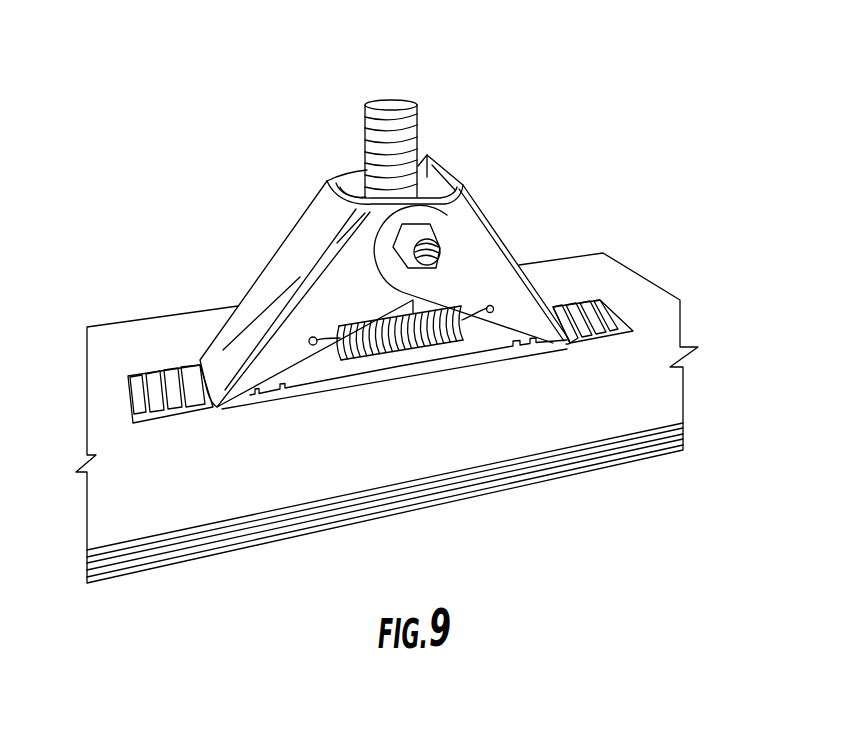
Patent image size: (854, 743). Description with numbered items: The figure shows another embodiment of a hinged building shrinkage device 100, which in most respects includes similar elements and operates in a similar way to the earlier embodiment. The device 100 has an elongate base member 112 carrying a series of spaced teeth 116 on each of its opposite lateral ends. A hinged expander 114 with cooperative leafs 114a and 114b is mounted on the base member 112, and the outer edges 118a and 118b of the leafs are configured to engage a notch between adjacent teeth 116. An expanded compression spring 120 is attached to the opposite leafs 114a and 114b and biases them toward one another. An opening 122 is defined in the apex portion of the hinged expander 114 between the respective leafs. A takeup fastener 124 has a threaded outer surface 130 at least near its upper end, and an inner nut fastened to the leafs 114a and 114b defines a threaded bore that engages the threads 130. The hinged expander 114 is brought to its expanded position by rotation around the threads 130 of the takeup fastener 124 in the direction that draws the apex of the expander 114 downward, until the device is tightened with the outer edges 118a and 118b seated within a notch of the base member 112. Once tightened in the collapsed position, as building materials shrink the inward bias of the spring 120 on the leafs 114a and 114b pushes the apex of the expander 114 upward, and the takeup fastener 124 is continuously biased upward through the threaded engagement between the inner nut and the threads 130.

The hinged building shrinkage device 100 is at (554, 139).
The elongate base member 112 is at (308, 383).
The hinged expander 114 is at (440, 277).
The leaf 114a is at (500, 270).
The leaf 114b is at (272, 292).
The teeth 116 is at (175, 402).
The outer edge 118a is at (633, 331).
The outer edge 118b is at (200, 363).
The compression spring 120 is at (428, 347).
The opening 122 is at (430, 182).
The takeup fastener 124 is at (373, 101).
The threaded outer surface 130 is at (367, 158).